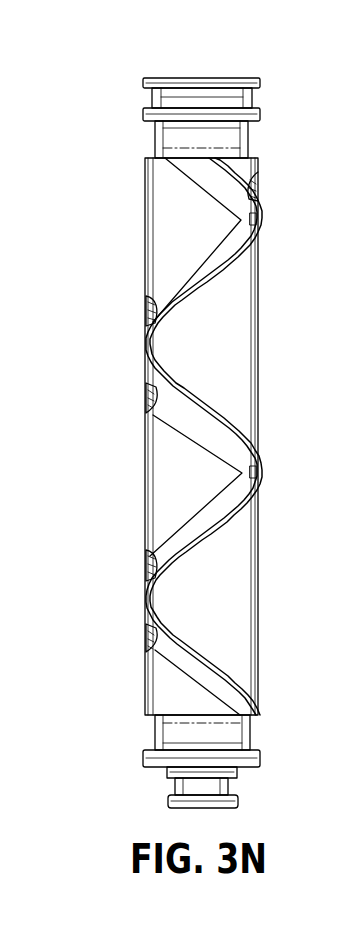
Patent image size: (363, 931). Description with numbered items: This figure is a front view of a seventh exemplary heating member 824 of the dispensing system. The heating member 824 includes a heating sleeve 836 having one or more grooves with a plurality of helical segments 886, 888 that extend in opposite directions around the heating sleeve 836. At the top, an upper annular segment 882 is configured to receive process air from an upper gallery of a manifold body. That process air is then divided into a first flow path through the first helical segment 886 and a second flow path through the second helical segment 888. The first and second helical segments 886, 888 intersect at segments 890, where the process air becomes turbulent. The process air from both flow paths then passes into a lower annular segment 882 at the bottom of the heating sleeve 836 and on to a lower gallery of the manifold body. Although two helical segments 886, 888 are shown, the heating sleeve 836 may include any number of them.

The heating member 824 is at (66, 77).
The annular segment 882 is at (150, 146).
The heating sleeve 836 is at (160, 243).
The first helical segment 886 is at (152, 398).
The second helical segment 888 is at (160, 297).
The intersecting segments 890 is at (148, 352).